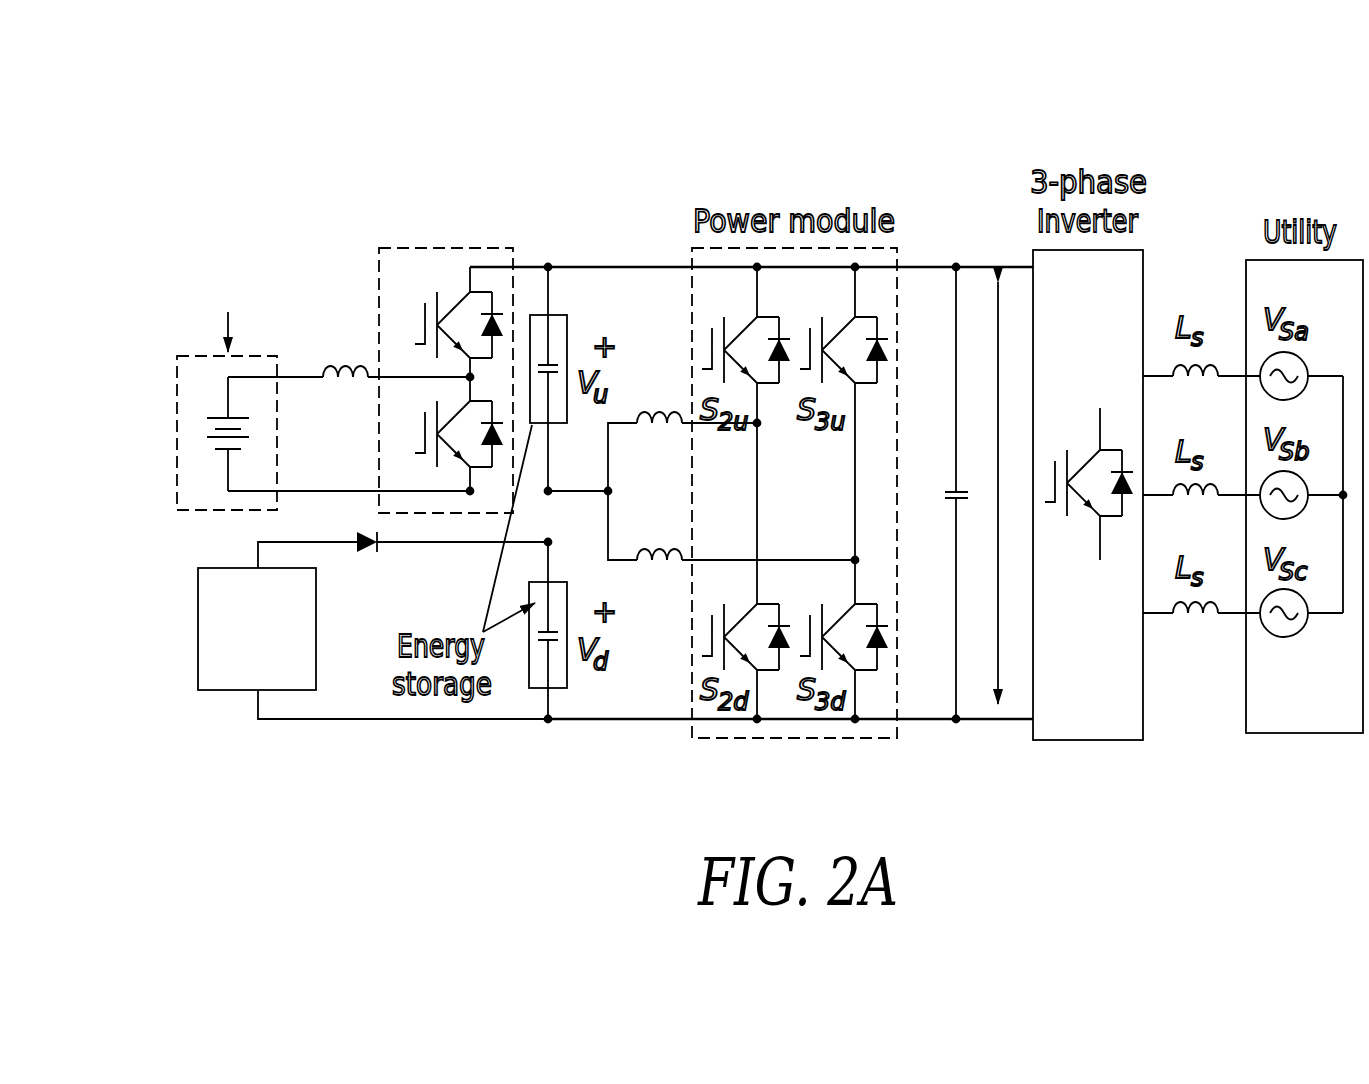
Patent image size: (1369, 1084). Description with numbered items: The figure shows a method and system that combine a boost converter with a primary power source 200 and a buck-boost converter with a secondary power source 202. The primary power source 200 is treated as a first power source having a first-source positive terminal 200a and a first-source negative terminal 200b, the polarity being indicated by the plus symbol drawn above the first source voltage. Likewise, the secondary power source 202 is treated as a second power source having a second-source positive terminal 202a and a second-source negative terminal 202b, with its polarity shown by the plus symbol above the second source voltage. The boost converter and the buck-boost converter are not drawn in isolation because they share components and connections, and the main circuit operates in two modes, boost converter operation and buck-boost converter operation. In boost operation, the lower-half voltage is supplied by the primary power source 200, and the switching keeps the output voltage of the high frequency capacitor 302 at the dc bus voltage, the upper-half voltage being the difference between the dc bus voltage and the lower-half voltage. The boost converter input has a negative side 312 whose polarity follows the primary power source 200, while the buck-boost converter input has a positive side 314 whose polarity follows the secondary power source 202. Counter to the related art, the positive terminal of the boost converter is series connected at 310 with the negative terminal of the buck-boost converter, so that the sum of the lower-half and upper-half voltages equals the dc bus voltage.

The primary power source 200 is at (178, 688).
The first-source positive terminal 200a is at (237, 545).
The first-source negative terminal 200b is at (243, 708).
The secondary power source 202 is at (157, 510).
The second-source positive terminal 202a is at (210, 377).
The second-source negative terminal 202b is at (210, 487).
The high frequency capacitor 302 is at (957, 245).
The series connection node of boost converter positive terminal and buck-boost conve 310 is at (632, 491).
The boost converter negative terminal connection 312 is at (630, 737).
The buck-boost converter positive terminal connection 314 is at (615, 232).